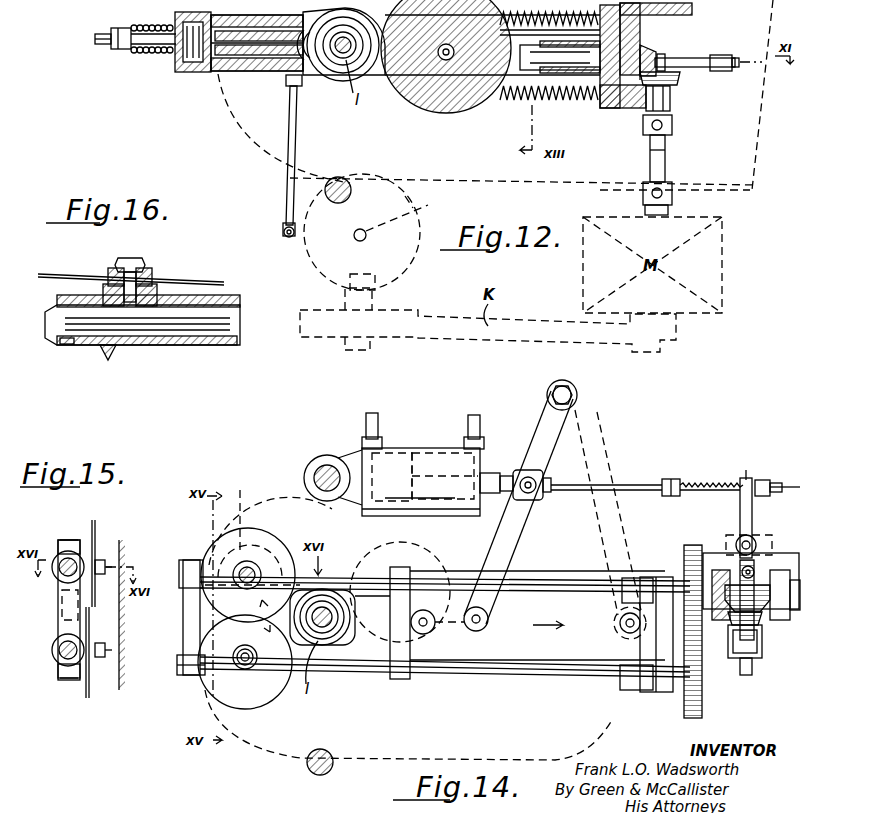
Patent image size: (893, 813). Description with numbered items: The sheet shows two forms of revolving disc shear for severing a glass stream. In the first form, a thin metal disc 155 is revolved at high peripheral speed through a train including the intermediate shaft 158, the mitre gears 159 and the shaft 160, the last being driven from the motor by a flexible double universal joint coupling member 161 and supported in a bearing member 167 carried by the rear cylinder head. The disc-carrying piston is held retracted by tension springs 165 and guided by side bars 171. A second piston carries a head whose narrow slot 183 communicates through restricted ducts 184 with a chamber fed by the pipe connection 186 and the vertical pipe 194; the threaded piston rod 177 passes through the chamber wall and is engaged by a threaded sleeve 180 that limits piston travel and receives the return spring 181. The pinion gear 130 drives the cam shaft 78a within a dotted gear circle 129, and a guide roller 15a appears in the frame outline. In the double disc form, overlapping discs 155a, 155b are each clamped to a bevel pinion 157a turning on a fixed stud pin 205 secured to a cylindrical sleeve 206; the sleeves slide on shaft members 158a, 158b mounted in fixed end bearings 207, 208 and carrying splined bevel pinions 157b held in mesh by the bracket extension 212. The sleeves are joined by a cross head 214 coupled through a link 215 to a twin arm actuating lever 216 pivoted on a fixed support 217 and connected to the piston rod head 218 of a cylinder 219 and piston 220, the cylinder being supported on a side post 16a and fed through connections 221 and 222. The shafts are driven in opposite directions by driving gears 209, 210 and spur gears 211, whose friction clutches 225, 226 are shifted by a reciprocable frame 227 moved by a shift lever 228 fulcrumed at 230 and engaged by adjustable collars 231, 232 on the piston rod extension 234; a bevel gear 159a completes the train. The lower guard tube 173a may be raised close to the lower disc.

In FIG. 12, the threaded piston rod 177 is at (104, 45).
In FIG. 12, the threaded sleeve 180 is at (124, 50).
In FIG. 12, the return spring 181 is at (149, 26).
In FIG. 12, the restricted ducts 184 is at (282, 62).
In FIG. 12, the narrow slot 183 is at (306, 68).
In FIG. 12, the pipe connection 186 is at (298, 128).
In FIG. 12, the vertical pipe 194 is at (284, 228).
In FIG. 12, the thin metal disc 155 is at (443, 111).
In FIG. 12, the tension springs 165 is at (512, 100).
In FIG. 12, the side bars 171 is at (569, 97).
In FIG. 12, the bearing member 167 is at (622, 104).
In FIG. 12, the mitre gears 159 is at (651, 53).
In FIG. 12, the intermediate shaft 158 is at (700, 58).
In FIG. 12, the shaft 160 is at (672, 100).
In FIG. 14, the shaft 160 is at (752, 668).
In FIG. 12, the flexible coupling member 161 is at (681, 132).
In FIG. 12, the guide roller 15a is at (349, 194).
In FIG. 14, the guide roller 15a is at (331, 766).
In FIG. 12, the cam circle 129 is at (412, 256).
In FIG. 12, the pinion gear 130 is at (377, 282).
In FIG. 12, the cam shaft 78a is at (417, 218).
In FIG. 16, the upper disc 155a is at (201, 282).
In FIG. 15, the upper disc 155a is at (97, 540).
In FIG. 14, the upper disc 155a is at (266, 545).
In FIG. 15, the lower disc 155b is at (88, 698).
In FIG. 14, the lower disc 155b is at (259, 698).
In FIG. 16, the fixed stud pin 205 is at (130, 258).
In FIG. 16, the bevel pinion 157a is at (151, 291).
In FIG. 16, the cylindrical sleeve 206 is at (190, 342).
In FIG. 14, the cylindrical sleeve 206 is at (345, 565).
In FIG. 16, the upper shaft member 158a is at (144, 332).
In FIG. 15, the upper shaft member 158a is at (60, 577).
In FIG. 14, the upper shaft member 158a is at (541, 577).
In FIG. 15, the lower shaft member 158b is at (58, 645).
In FIG. 14, the lower shaft member 158b is at (476, 674).
In FIG. 16, the bevel pinions 157b is at (100, 348).
In FIG. 15, the bevel pinions 157b is at (60, 558).
In FIG. 16, the bracket extension 212 is at (66, 343).
In FIG. 15, the bracket extension 212 is at (70, 540).
In FIG. 14, the bracket extension 212 is at (244, 513).
In FIG. 14, the fluid supply connection 222 is at (366, 425).
In FIG. 14, the fluid supply connection 221 is at (478, 426).
In FIG. 14, the fixed cylinder member 219 is at (440, 453).
In FIG. 14, the piston 220 is at (399, 452).
In FIG. 14, the side post 16a is at (317, 468).
In FIG. 14, the fixed end bearings 207 is at (200, 558).
In FIG. 14, the lower guard tube 173a is at (340, 644).
In FIG. 14, the cross head 214 is at (396, 680).
In FIG. 14, the fixed support 217 is at (580, 395).
In FIG. 14, the twin arm actuating lever 216 is at (518, 523).
In FIG. 14, the link 215 is at (452, 630).
In FIG. 14, the piston rod head 218 is at (511, 474).
In FIG. 14, the piston rod extension 234 is at (635, 484).
In FIG. 14, the adjustable collar 232 is at (671, 479).
In FIG. 14, the adjustable collar 231 is at (770, 486).
In FIG. 14, the fulcrum 230 is at (740, 540).
In FIG. 14, the shift lever 228 is at (749, 478).
In FIG. 14, the reciprocable frame 227 is at (778, 556).
In FIG. 14, the driving gear 209 is at (755, 565).
In FIG. 14, the driving gear 210 is at (738, 565).
In FIG. 14, the friction clutch 226 is at (720, 566).
In FIG. 14, the friction clutch 225 is at (762, 618).
In FIG. 14, the bevel gear 159a is at (735, 620).
In FIG. 14, the spur gears 211 is at (685, 548).
In FIG. 14, the fixed end bearings 208 is at (648, 582).